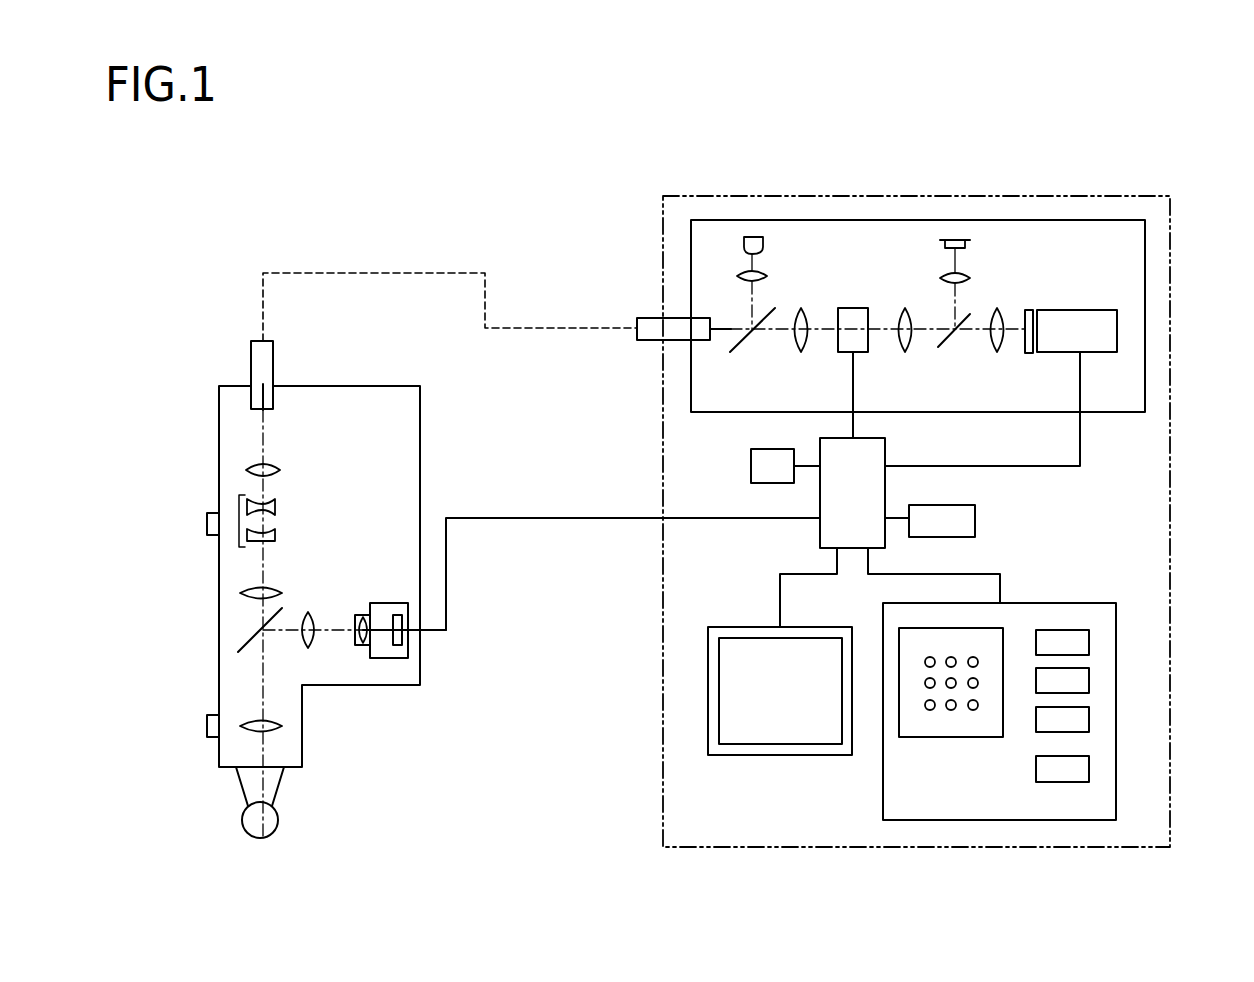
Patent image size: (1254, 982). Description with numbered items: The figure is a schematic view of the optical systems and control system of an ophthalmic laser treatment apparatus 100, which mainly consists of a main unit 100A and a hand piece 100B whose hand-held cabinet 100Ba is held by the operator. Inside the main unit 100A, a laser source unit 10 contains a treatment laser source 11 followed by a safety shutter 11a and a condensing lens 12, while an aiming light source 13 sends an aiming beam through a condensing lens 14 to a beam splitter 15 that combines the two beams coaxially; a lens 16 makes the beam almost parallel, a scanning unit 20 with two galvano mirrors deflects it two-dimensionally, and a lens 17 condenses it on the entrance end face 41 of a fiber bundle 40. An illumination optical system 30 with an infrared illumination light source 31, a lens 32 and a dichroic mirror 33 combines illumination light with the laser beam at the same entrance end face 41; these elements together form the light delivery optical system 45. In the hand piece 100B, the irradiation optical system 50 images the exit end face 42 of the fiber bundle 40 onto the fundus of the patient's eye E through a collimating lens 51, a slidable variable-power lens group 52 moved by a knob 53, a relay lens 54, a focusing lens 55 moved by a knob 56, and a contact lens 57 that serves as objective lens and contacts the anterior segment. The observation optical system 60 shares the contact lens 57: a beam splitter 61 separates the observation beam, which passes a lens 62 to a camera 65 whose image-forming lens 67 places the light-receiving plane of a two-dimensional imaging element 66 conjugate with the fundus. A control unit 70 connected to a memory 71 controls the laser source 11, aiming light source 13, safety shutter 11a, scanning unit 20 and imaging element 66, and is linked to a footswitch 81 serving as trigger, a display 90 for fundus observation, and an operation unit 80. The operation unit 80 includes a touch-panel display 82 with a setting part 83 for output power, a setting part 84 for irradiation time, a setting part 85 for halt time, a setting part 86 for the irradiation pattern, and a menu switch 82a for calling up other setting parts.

The ophthalmic laser treatment apparatus 100 is at (512, 156).
The main unit 100A is at (961, 180).
The hand piece 100B is at (182, 380).
The hand-held cabinet 100Ba is at (421, 449).
The laser source unit 10 is at (1125, 221).
The treatment laser source 11 is at (1095, 352).
The safety shutter 11a is at (1032, 310).
The condensing lens 12 is at (1000, 350).
The aiming light source 13 is at (970, 240).
The condensing lens 14 is at (970, 278).
The beam splitter 15 is at (944, 341).
The lens 16 is at (905, 352).
The lens 17 is at (803, 308).
The scanning unit 20 is at (858, 308).
The illumination optical system 30 is at (720, 252).
The illumination light source 31 is at (744, 243).
The lens 32 is at (766, 272).
The dichroic mirror 33 is at (740, 345).
The fiber bundle 40 is at (274, 356).
The entrance end face 41 is at (712, 342).
The exit end face 42 is at (268, 412).
The light delivery optical system 45 is at (504, 260).
The irradiation optical system 50 is at (299, 512).
The lens 51 is at (250, 470).
The lens group 52 is at (239, 521).
The knob 53 is at (207, 527).
The relay lens 54 is at (240, 593).
The focusing lens 55 is at (241, 726).
The knob 56 is at (207, 727).
The contact lens 57 is at (241, 788).
The observation optical system 60 is at (339, 672).
The beam splitter 61 is at (278, 611).
The lens 62 is at (313, 650).
The camera 65 is at (390, 660).
The imaging element 66 is at (410, 638).
The image-forming lens 67 is at (362, 648).
The control unit 70 is at (820, 535).
The memory 71 is at (751, 466).
The operation unit 80 is at (1052, 553).
The footswitch 81 is at (975, 520).
The touch-panel display 82 is at (1070, 603).
The menu switch 82a is at (1089, 765).
The setting part 83 is at (1089, 640).
The setting part 84 is at (1089, 681).
The setting part 85 is at (1089, 720).
The setting part 86 is at (945, 737).
The display 90 is at (755, 755).
The patient's eye E is at (244, 824).